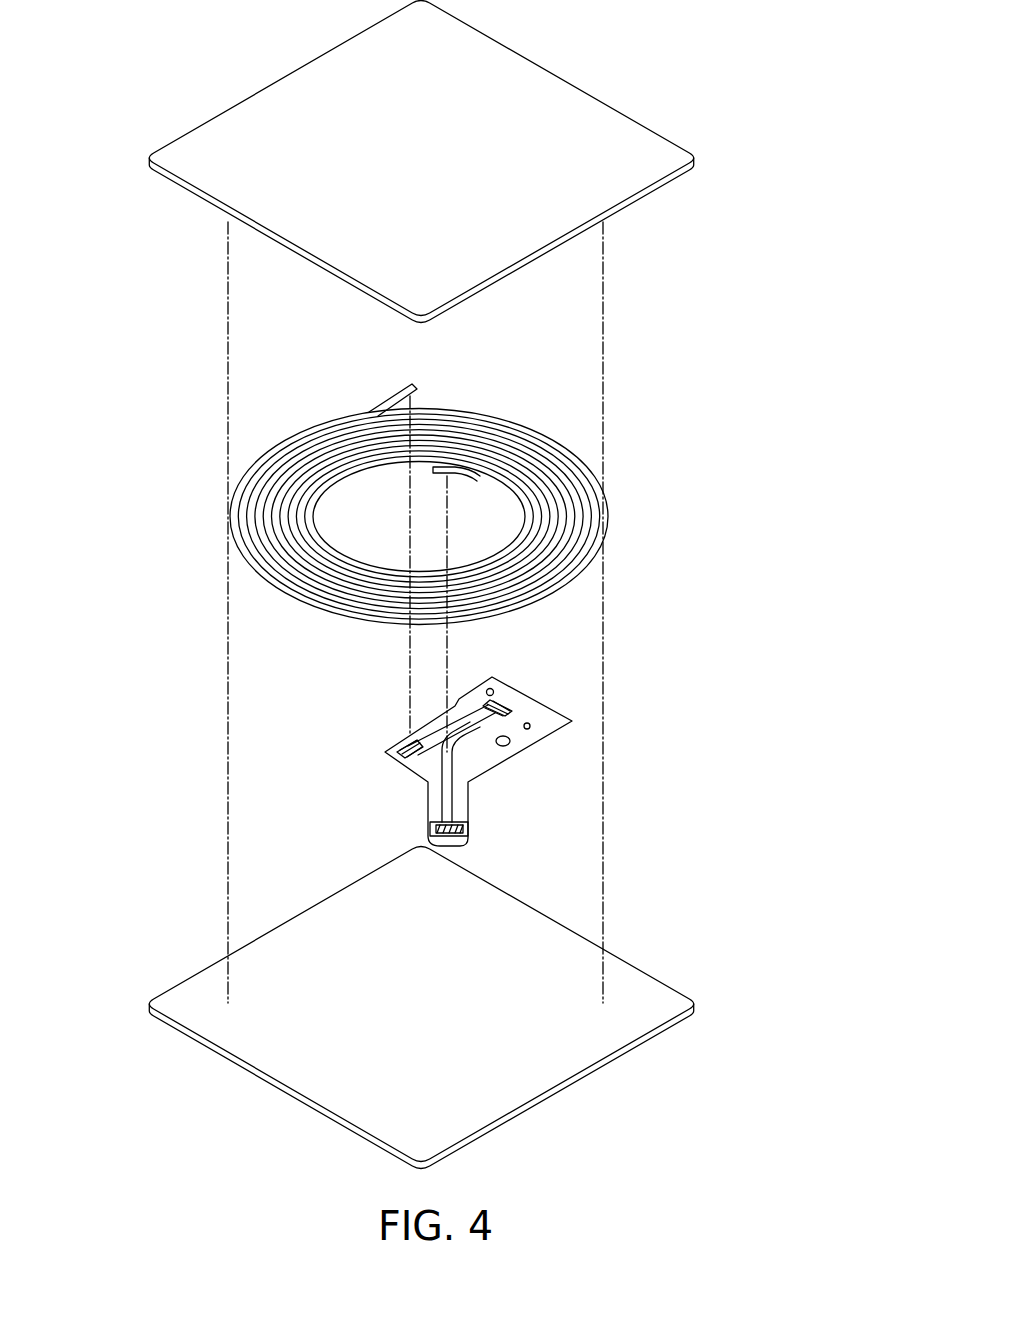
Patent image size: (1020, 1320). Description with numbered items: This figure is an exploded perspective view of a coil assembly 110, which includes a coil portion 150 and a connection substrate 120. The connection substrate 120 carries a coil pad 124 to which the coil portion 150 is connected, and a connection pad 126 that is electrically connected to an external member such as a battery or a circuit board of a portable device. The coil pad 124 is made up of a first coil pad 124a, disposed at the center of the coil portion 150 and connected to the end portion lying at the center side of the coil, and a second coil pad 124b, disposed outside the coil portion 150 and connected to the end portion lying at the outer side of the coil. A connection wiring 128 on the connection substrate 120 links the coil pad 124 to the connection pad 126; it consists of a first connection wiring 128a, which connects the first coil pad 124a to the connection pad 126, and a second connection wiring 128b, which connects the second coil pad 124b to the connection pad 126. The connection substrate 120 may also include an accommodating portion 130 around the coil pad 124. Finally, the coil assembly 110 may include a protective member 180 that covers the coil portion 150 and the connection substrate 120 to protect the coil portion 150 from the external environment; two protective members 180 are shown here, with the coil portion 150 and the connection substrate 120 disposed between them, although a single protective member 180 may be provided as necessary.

The coil assembly 110 is at (138, 55).
The protective member 180 is at (692, 138).
The coil portion 150 is at (615, 510).
The connection substrate 120 is at (574, 712).
The coil pad 124 is at (358, 766).
The first coil pad 124a is at (430, 823).
The second coil pad 124b is at (395, 745).
The connection pad 126 is at (508, 706).
The connection wiring 128 is at (629, 759).
The first connection wiring 128a is at (512, 737).
The second connection wiring 128b is at (528, 727).
The accommodating portion 130 is at (468, 825).